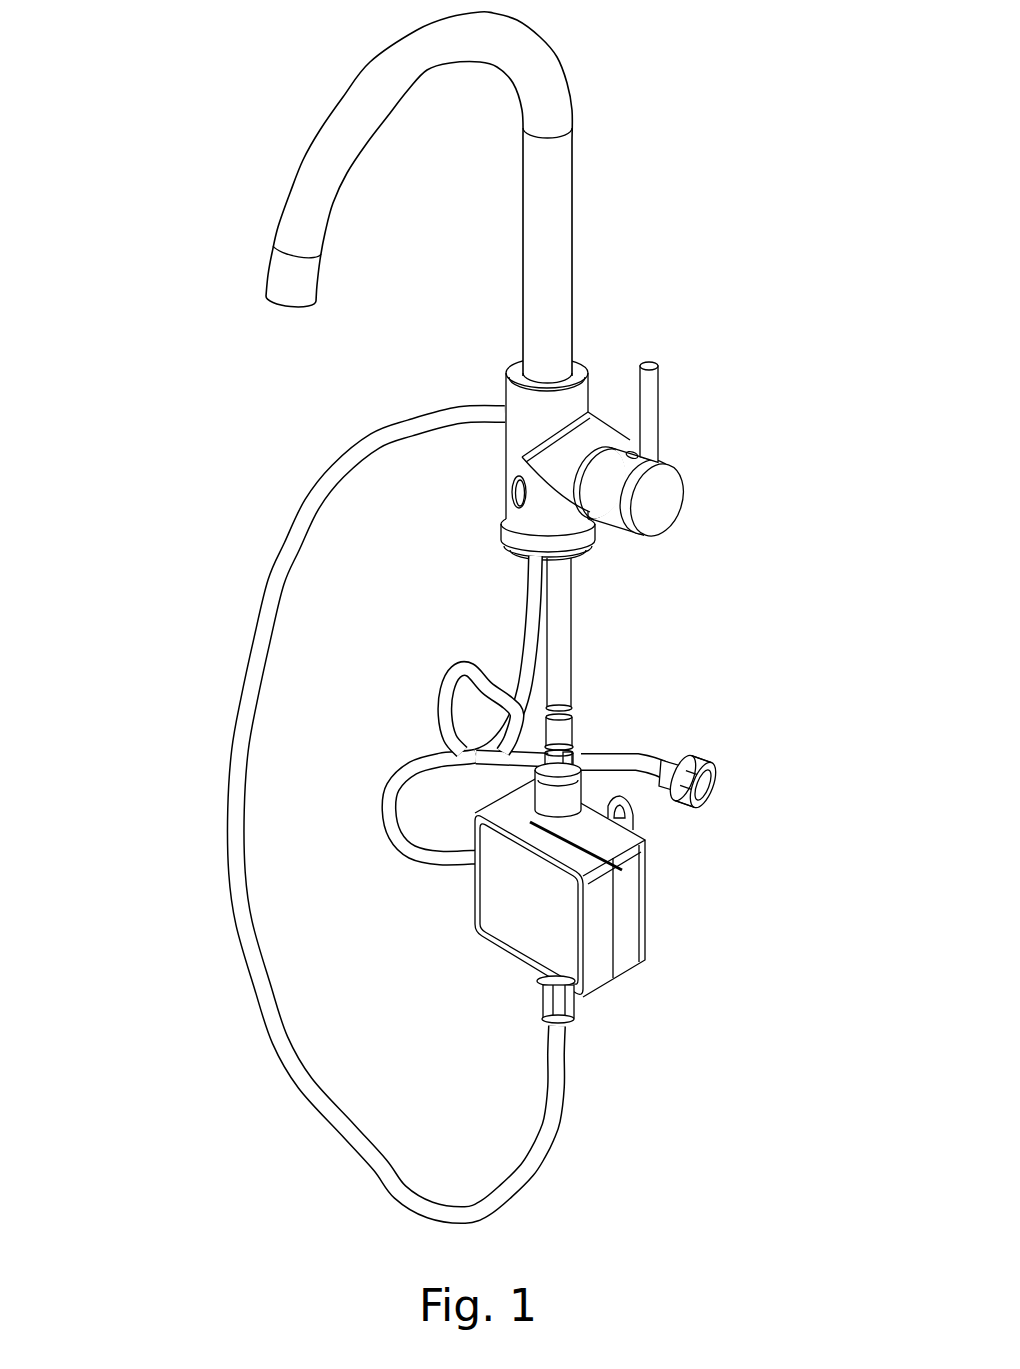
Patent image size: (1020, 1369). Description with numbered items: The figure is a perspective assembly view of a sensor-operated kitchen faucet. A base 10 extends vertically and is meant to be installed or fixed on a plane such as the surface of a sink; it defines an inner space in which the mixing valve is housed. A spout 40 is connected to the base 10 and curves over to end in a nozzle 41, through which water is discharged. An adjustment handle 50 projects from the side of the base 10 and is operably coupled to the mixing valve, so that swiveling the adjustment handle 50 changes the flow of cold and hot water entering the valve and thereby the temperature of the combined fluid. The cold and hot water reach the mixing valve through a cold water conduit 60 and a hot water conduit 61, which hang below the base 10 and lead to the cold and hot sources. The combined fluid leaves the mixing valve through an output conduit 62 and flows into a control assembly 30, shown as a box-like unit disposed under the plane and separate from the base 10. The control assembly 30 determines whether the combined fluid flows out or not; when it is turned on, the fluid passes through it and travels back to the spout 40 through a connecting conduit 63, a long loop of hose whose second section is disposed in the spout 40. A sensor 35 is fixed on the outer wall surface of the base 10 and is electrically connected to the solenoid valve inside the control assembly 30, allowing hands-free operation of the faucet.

The base 10 is at (598, 382).
The control assembly 30 is at (658, 910).
The sensor 35 is at (505, 490).
The spout 40 is at (542, 62).
The nozzle 41 is at (283, 313).
The adjustment handle 50 is at (660, 508).
The cold water conduit 60 is at (390, 802).
The hot water conduit 61 is at (537, 602).
The output conduit 62 is at (557, 625).
The connecting conduit 63 is at (233, 812).